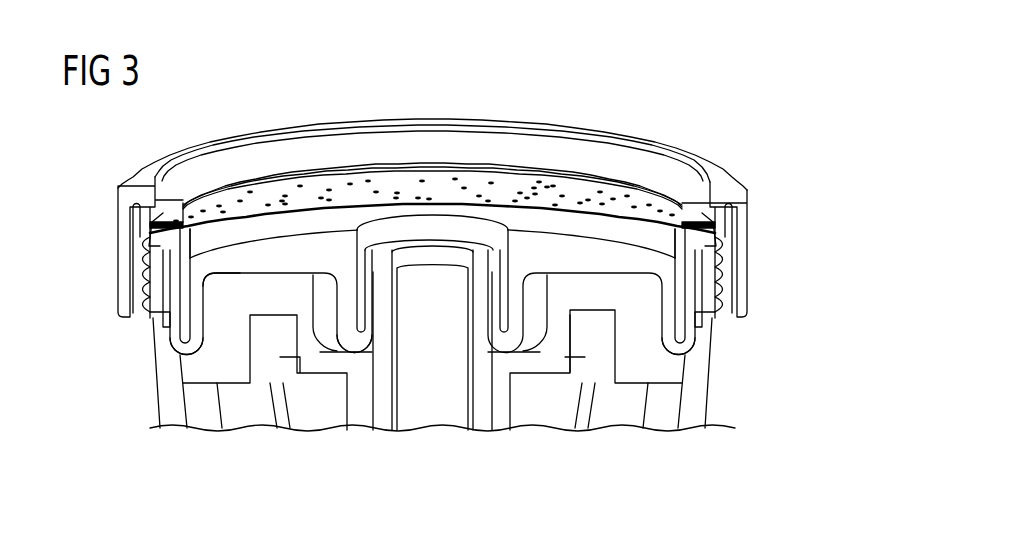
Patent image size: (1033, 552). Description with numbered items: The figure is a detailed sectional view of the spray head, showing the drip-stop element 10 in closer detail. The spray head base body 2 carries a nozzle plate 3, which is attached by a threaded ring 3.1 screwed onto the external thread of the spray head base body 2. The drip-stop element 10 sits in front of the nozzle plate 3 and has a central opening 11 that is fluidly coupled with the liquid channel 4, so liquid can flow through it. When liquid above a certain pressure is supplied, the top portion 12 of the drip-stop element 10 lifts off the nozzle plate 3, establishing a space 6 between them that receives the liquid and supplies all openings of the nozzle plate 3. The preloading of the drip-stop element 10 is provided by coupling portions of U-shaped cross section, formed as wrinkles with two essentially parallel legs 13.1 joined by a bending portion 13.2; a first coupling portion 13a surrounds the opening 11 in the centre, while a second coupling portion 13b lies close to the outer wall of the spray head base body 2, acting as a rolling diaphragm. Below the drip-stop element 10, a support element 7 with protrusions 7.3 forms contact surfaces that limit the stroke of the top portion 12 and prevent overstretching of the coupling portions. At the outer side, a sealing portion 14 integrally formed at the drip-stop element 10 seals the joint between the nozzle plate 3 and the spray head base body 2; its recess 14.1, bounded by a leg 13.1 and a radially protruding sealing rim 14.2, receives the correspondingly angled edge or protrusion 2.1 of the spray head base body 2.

The spray head base body 2 is at (713, 425).
The edge or protrusion of the spray head base body 2.1 is at (148, 270).
The nozzle plate 3 is at (492, 182).
The threaded ring 3.1 is at (708, 166).
The liquid channel 4 is at (438, 399).
The space 6 is at (245, 233).
The support element 7 is at (540, 373).
The protrusions 7.3 is at (600, 312).
The drip-stop element 10 is at (217, 305).
The opening 11 is at (428, 248).
The top portion 12 is at (283, 240).
The legs 13.1 is at (170, 320).
The bending portion 13.2 is at (690, 358).
The first coupling portion 13a is at (343, 353).
The second coupling portion 13b is at (186, 372).
The sealing portion 14 is at (718, 245).
The recess 14.1 is at (727, 283).
The sealing rim 14.2 is at (700, 254).